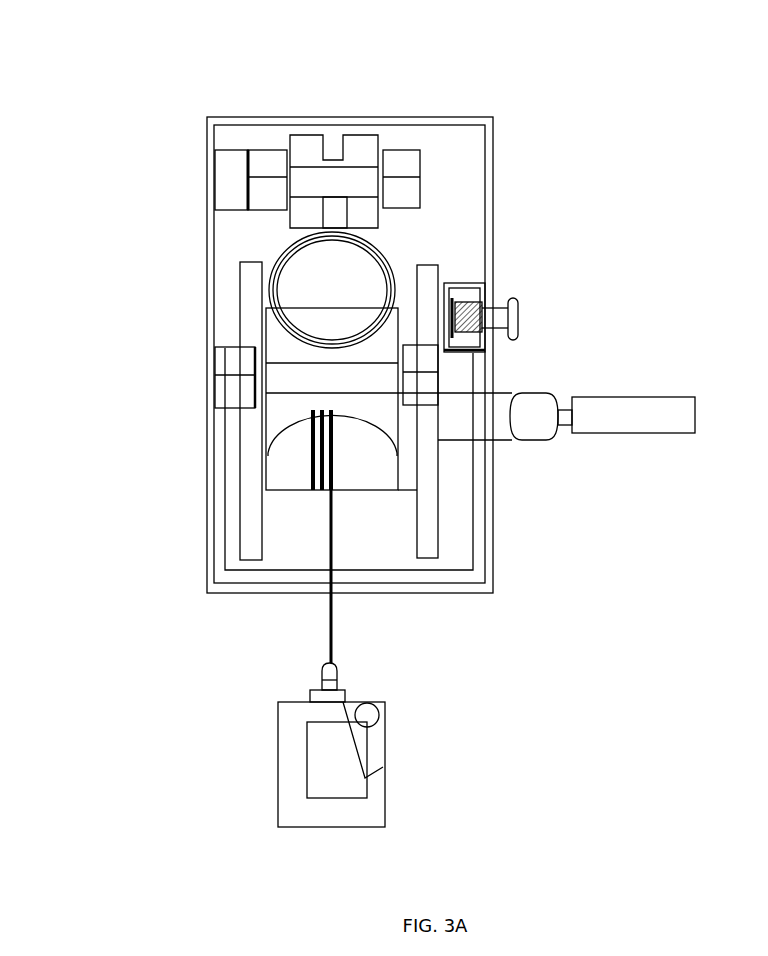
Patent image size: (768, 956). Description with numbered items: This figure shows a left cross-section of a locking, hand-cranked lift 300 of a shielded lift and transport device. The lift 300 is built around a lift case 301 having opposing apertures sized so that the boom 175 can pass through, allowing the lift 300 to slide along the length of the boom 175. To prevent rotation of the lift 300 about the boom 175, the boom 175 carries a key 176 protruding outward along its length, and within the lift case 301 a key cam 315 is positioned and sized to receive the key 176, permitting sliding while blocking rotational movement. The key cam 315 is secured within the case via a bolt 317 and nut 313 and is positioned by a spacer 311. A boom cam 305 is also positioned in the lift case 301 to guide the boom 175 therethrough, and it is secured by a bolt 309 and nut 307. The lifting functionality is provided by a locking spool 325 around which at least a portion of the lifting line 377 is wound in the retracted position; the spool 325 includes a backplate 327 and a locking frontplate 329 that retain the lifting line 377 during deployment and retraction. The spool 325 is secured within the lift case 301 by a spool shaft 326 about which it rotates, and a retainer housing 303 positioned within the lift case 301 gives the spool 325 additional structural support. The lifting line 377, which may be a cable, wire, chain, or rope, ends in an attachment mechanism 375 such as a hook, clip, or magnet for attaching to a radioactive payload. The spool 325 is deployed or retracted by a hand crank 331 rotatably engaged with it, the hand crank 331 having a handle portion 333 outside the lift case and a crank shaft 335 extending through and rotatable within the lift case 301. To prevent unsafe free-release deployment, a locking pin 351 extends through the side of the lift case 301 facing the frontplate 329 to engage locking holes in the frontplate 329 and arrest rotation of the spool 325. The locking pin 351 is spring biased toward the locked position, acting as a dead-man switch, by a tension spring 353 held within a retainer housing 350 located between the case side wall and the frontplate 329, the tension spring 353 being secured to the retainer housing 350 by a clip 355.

The lift 300 is at (110, 78).
The lift case 301 is at (500, 473).
The retainer housing 303 is at (472, 578).
The spool shaft 326 is at (233, 430).
The spacer 311 is at (235, 147).
The nut 313 is at (266, 148).
The key cam 315 is at (365, 130).
The key 176 is at (335, 213).
The bolt 317 is at (408, 138).
The boom 175 is at (377, 247).
The backplate 327 is at (238, 257).
The locking frontplate 329 is at (432, 257).
The nut 307 is at (228, 347).
The bolt 309 is at (420, 393).
The boom cam 305 is at (360, 395).
The hand crank 331 is at (537, 388).
The handle portion 333 is at (652, 395).
The crank shaft 335 is at (453, 442).
The retainer housing 350 is at (458, 277).
The clip 355 is at (470, 293).
The tension spring 353 is at (492, 288).
The locking pin 351 is at (520, 296).
The locking spool 325 is at (293, 480).
The lifting line 377 is at (337, 633).
The attachment mechanism 375 is at (392, 818).